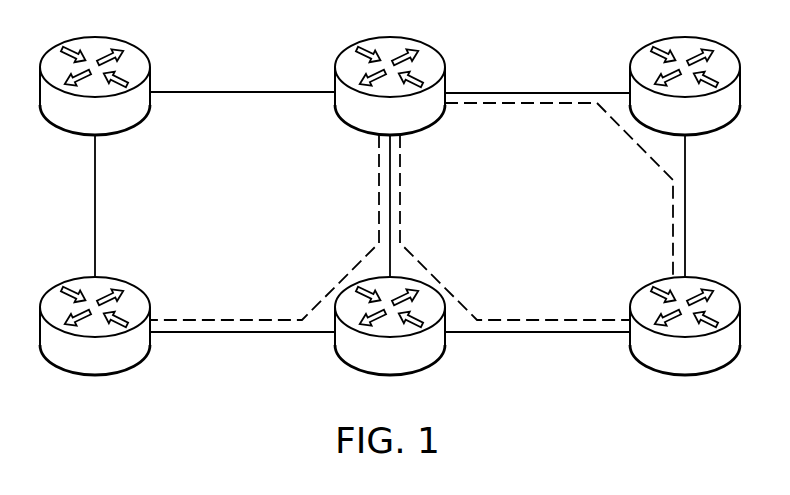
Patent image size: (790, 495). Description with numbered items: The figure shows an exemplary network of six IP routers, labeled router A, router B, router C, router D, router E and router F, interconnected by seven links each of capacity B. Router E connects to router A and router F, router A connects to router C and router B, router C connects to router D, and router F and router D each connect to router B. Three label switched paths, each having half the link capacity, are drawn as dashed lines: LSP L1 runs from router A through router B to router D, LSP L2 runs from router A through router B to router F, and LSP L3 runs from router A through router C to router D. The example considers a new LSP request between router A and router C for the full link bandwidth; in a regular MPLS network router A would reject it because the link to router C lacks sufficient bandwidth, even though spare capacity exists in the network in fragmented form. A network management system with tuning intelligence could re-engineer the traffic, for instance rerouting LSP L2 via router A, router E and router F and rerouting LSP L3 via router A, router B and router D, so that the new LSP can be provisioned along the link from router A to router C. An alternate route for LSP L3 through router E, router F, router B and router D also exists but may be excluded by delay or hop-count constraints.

The router A is at (390, 71).
The router B is at (390, 340).
The router C is at (685, 71).
The router D is at (685, 340).
The router E is at (95, 71).
The router F is at (95, 340).
The LSP L1 is at (515, 227).
The LSP L2 is at (264, 227).
The LSP L3 is at (559, 190).